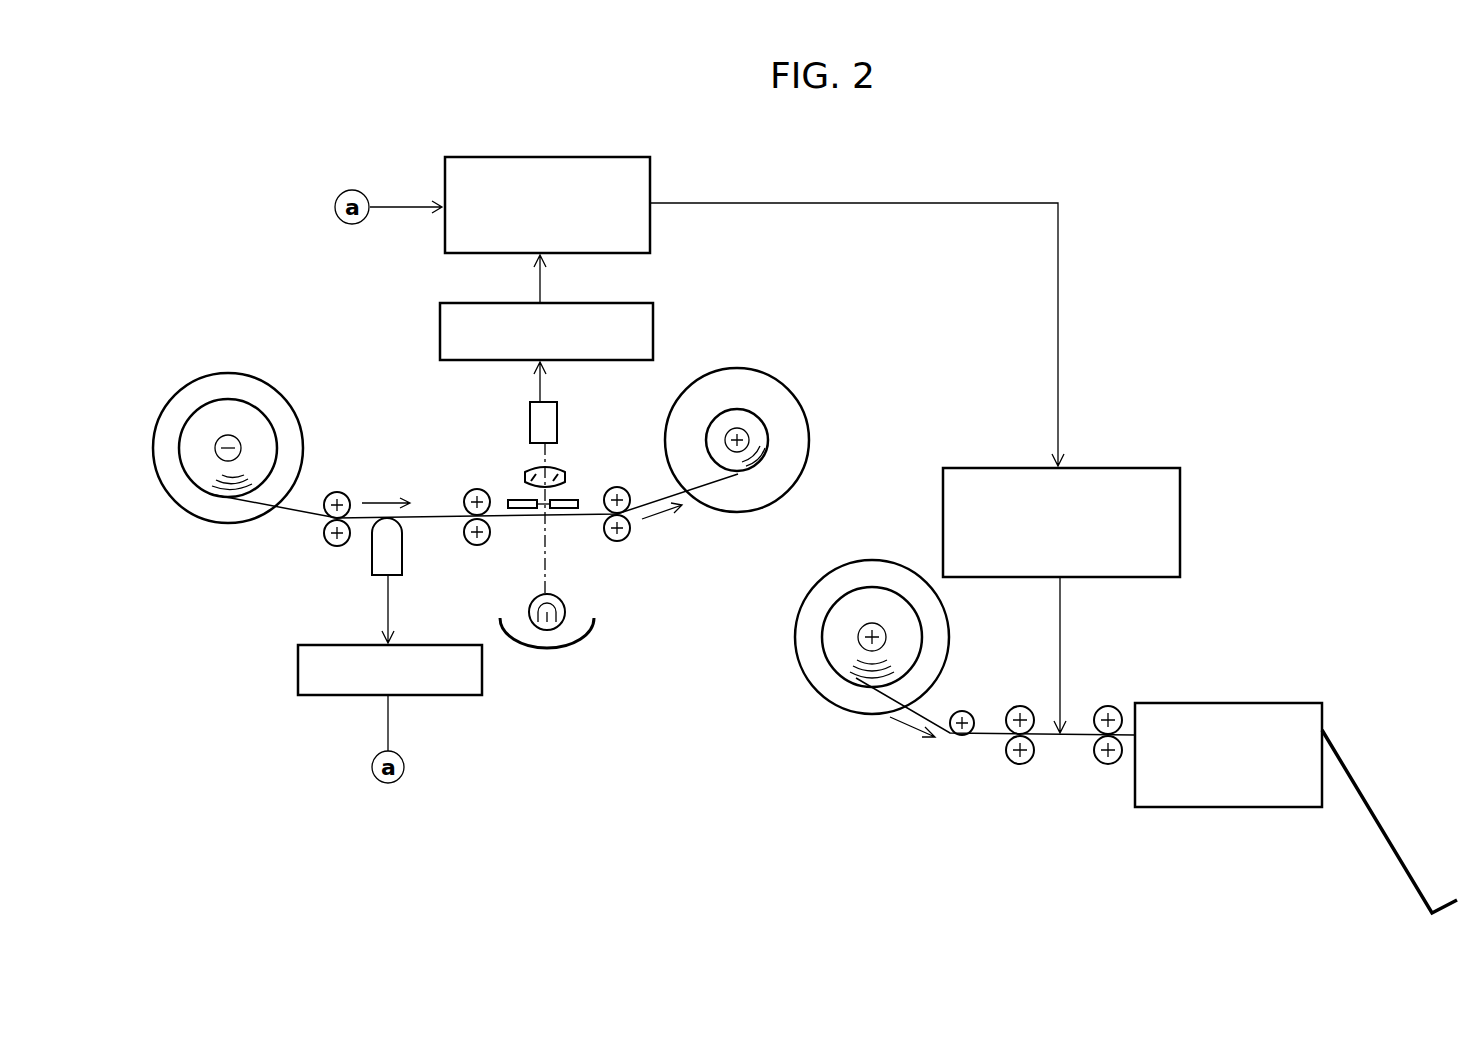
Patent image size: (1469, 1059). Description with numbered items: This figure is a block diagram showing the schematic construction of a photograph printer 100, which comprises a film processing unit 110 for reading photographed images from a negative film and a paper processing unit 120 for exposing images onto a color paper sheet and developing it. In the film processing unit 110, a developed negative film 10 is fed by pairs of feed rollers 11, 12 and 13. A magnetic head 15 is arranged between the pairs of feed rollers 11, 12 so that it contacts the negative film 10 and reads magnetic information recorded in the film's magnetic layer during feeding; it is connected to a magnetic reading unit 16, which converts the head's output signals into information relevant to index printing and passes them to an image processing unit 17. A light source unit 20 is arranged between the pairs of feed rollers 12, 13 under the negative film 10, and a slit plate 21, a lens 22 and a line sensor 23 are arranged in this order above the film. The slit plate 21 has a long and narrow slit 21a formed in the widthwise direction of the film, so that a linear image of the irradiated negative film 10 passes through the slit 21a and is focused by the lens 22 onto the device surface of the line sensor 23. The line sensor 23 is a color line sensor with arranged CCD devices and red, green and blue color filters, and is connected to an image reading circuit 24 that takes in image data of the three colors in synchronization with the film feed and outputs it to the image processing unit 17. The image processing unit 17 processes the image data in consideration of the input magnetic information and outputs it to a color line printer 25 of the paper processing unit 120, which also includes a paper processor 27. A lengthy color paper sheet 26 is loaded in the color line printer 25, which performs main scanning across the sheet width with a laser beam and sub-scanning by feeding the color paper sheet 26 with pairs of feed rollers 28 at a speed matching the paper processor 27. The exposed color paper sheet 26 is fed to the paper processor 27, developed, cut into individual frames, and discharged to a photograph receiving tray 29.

The negative film 10 is at (292, 513).
The pair of feed rollers 11 is at (337, 492).
The pair of feed rollers 12 is at (470, 490).
The pair of feed rollers 13 is at (620, 541).
The magnetic head 15 is at (373, 552).
The magnetic reading unit 16 is at (438, 696).
The image processing unit 17 is at (650, 183).
The light source unit 20 is at (598, 607).
The slit plate 21 is at (520, 500).
The slit 21a is at (538, 524).
The lens 22 is at (565, 472).
The line sensor 23 is at (557, 420).
The image reading circuit 24 is at (653, 322).
The color line printer 25 is at (973, 468).
The color paper sheet 26 is at (975, 736).
The paper processor 27 is at (1237, 703).
The pairs of feed rollers 28 is at (1015, 706).
The photograph receiving tray 29 is at (1390, 835).
The photograph printer 100 is at (1151, 220).
The film processing unit 110 is at (294, 211).
The paper processing unit 120 is at (1272, 385).